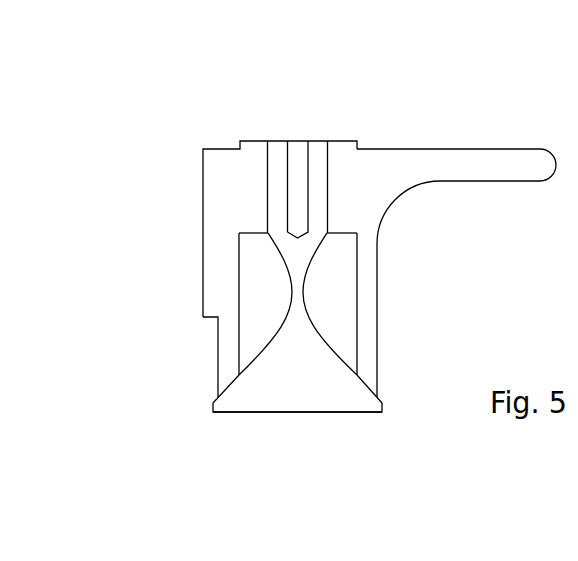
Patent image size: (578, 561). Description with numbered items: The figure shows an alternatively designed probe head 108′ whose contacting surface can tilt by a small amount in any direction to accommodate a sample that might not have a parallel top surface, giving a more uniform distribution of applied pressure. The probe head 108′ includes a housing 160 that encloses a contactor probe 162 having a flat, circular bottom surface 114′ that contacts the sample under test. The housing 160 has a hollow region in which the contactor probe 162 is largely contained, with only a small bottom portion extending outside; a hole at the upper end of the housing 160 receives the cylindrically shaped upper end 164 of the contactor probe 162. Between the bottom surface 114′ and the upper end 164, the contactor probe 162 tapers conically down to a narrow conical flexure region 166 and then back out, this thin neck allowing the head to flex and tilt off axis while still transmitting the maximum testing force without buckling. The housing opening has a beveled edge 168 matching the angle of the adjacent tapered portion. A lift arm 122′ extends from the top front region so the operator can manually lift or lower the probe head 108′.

The probe head 108′ is at (150, 184).
The lift arm 122′ is at (483, 158).
The housing 160 is at (368, 270).
The upper end 164 is at (268, 152).
The narrow conical flexure region 166 is at (296, 292).
The beveled edge 168 is at (370, 383).
The contactor probe 162 is at (327, 397).
The bottom surface 114′ is at (268, 413).